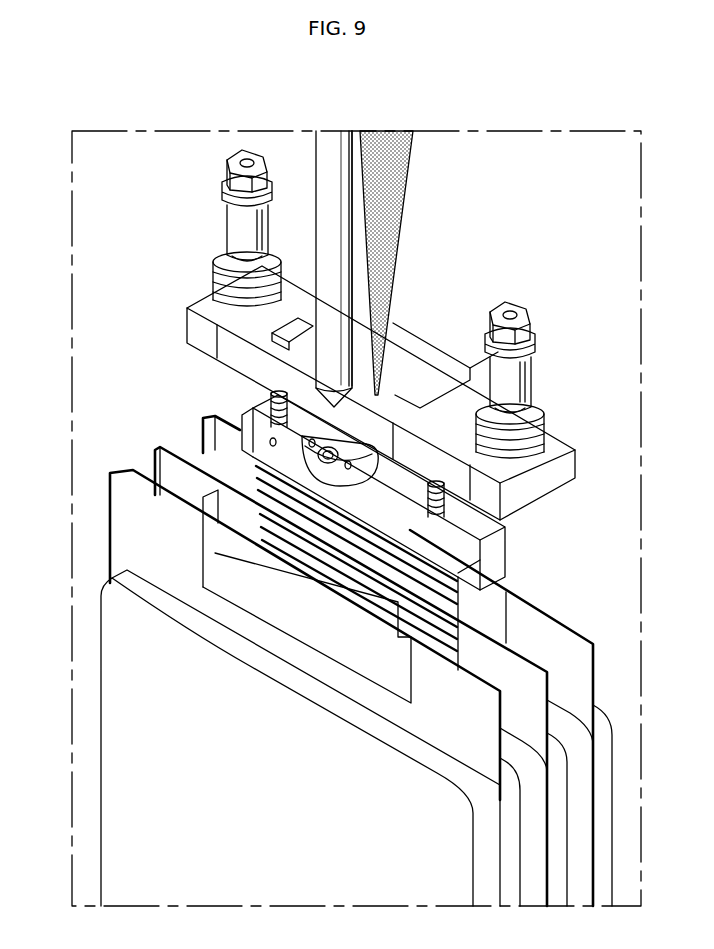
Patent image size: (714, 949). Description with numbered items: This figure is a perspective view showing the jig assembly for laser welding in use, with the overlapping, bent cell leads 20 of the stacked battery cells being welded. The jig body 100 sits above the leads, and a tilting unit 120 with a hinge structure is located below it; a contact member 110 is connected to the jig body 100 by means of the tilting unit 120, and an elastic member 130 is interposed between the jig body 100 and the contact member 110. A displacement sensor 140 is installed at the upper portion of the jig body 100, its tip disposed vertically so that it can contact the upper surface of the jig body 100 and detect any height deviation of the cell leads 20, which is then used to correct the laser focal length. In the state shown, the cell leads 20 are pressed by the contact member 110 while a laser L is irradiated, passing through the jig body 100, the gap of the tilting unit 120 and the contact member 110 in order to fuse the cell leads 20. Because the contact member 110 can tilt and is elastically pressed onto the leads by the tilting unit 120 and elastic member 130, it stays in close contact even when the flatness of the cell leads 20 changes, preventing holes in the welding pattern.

The cell leads 20 is at (320, 513).
The jig body 100 is at (197, 330).
The contact member 110 is at (302, 457).
The tilting unit 120 is at (247, 425).
The elastic member 130 is at (272, 395).
The displacement sensor 140 is at (332, 148).
The laser L is at (393, 215).